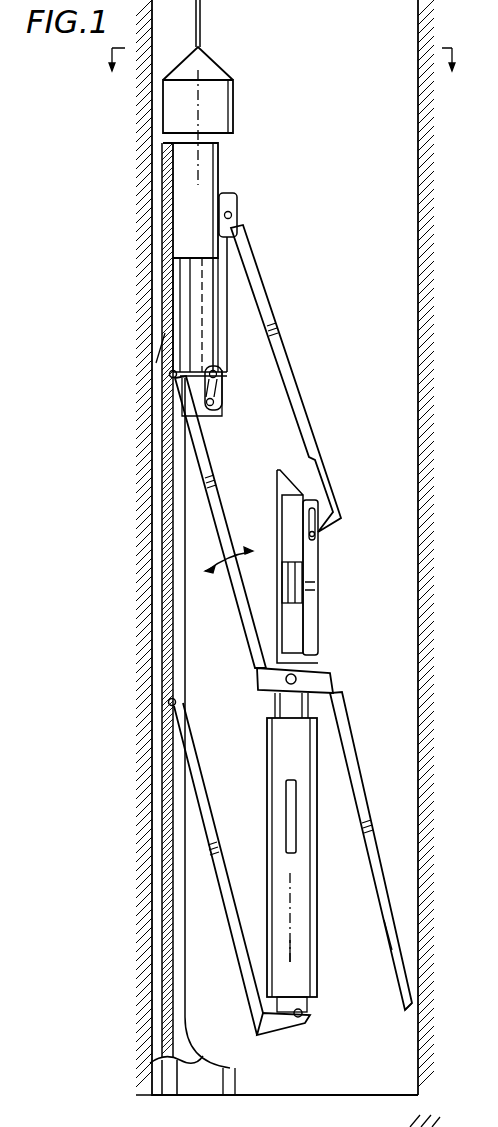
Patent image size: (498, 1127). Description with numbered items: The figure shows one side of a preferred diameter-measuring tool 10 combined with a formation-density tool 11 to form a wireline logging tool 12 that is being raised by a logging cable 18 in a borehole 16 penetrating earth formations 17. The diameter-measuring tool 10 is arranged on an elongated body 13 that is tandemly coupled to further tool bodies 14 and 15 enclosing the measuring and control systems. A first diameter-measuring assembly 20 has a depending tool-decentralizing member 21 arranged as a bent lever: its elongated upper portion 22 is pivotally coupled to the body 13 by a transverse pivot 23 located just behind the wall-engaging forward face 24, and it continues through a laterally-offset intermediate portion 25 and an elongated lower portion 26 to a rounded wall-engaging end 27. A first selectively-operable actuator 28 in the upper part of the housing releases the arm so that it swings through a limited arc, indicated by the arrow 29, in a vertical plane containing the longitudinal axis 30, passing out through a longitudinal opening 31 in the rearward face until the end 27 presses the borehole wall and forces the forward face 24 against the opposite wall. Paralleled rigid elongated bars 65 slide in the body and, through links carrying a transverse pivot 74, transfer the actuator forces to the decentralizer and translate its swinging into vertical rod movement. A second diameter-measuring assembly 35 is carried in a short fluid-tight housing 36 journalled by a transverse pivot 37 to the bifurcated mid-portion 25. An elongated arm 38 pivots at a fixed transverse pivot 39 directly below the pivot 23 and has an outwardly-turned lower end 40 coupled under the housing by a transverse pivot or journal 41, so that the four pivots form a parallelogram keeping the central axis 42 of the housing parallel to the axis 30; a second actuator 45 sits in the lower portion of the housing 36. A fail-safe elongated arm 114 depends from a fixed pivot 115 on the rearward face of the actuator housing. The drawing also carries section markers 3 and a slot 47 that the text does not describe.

The diameter-measuring tool 10 is at (284, 535).
The formation-density tool 11 is at (140, 540).
The wireline logging tool 12 is at (202, 152).
The elongated body 13 is at (168, 205).
The tool body 14 is at (228, 93).
The tool body 15 is at (175, 1084).
The borehole 16 is at (413, 152).
The earth formations 17 is at (132, 676).
The logging cable 18 is at (203, 12).
The first diameter-measuring assembly 20 is at (287, 723).
The depending tool-decentralizing member 21 is at (369, 790).
The elongated upper portion 22 is at (222, 520).
The transverse pivot 23 is at (168, 375).
The wall-engaging forward face 24 is at (165, 612).
The laterally-offset intermediate portion 25 is at (325, 677).
The elongated lower portion 26 is at (392, 930).
The rounded wall-engaging end 27 is at (410, 1009).
The first selectively-operable actuator 28 is at (192, 278).
The arrow 29 is at (222, 573).
The longitudinal axis 30 is at (198, 170).
The longitudinal opening 31 is at (228, 385).
The second diameter-measuring assembly 35 is at (337, 592).
The fluid-tight housing 36 is at (293, 865).
The transverse pivot 37 is at (293, 677).
The elongated arm 38 is at (220, 890).
The fixed transverse pivot 39 is at (170, 703).
The outwardly-turned lower end 40 is at (272, 1033).
The transverse pivot or journal 41 is at (303, 1015).
The central axis 42 is at (291, 958).
The second actuator 45 is at (302, 916).
The slot 47 is at (292, 842).
The paralleled rigid elongated bars 65 is at (195, 325).
The transverse pivot 74 is at (216, 372).
The elongated arm 114 is at (312, 437).
The fixed pivot 115 is at (233, 212).
The section line 3- 3 is at (277, 76).